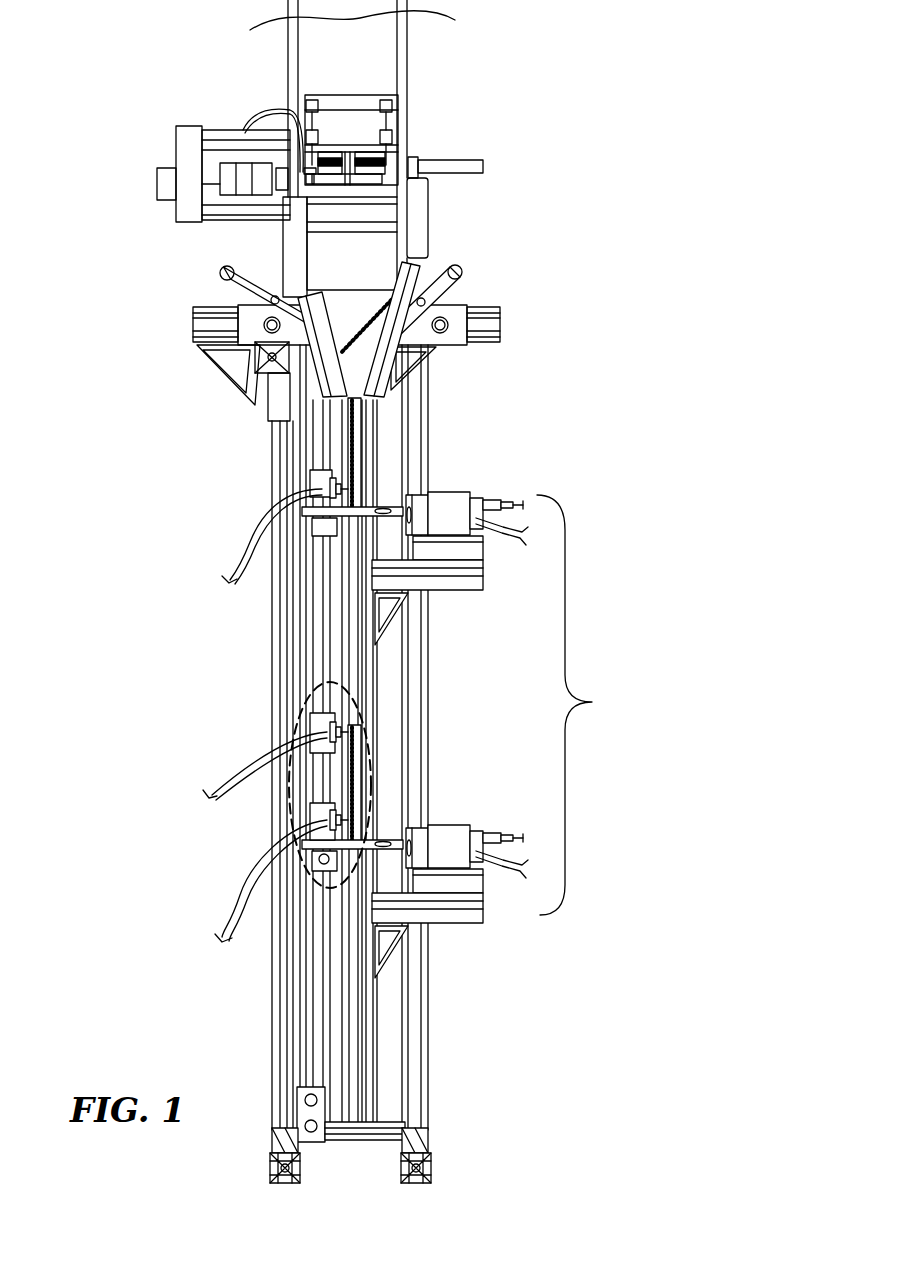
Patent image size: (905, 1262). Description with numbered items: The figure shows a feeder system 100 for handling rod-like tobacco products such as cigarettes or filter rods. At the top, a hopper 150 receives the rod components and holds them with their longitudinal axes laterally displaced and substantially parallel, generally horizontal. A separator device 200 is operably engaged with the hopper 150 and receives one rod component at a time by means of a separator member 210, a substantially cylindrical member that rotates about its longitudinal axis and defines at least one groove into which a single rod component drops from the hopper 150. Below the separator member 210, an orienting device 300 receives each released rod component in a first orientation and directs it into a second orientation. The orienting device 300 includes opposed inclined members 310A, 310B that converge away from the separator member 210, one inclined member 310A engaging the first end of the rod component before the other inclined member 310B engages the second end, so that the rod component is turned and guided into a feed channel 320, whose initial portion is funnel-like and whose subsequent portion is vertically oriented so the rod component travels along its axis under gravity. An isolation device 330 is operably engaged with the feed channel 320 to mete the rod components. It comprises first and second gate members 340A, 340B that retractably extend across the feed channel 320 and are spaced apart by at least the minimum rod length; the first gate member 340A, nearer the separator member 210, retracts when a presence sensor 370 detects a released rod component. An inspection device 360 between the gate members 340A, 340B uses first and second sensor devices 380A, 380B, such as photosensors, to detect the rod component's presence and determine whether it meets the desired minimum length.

The feeder system 100 is at (152, 323).
The hopper 150 is at (297, 97).
The separator device 200 is at (442, 182).
The separator member 210 is at (350, 157).
The orienting device 300 is at (441, 367).
The inclined member 310A is at (325, 372).
The inclined member 310B is at (382, 373).
The feed channel 320 is at (360, 408).
The isolation device 330 is at (590, 705).
The first gate member 340A is at (328, 520).
The second gate member 340B is at (360, 850).
The inspection device 360 is at (292, 810).
The presence sensor 370 is at (325, 490).
The first sensor device 380A is at (327, 726).
The second sensor device 380B is at (327, 820).